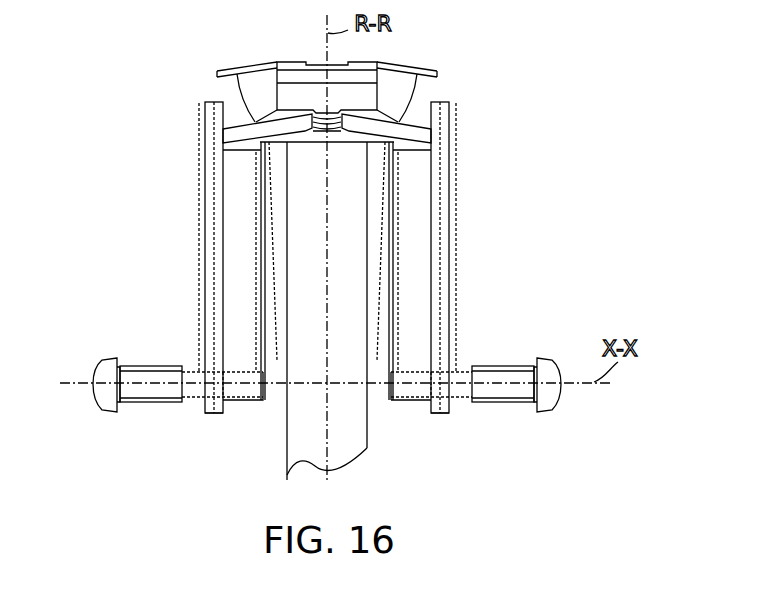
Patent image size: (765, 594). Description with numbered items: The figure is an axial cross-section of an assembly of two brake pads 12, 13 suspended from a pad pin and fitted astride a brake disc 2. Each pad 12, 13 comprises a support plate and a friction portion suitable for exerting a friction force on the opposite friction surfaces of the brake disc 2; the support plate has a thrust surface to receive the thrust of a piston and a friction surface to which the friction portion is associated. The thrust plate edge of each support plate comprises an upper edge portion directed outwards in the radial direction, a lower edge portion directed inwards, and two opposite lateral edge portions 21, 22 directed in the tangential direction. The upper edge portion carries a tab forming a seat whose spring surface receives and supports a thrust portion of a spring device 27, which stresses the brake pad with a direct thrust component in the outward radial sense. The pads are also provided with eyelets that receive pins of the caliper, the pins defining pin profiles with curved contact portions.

The brake disc 2 is at (347, 223).
The brake pad 12 is at (440, 297).
The brake pad 13 is at (228, 255).
The lateral edge portion 21 is at (212, 225).
The lateral edge portion 22 is at (440, 236).
The spring device 27 is at (380, 92).